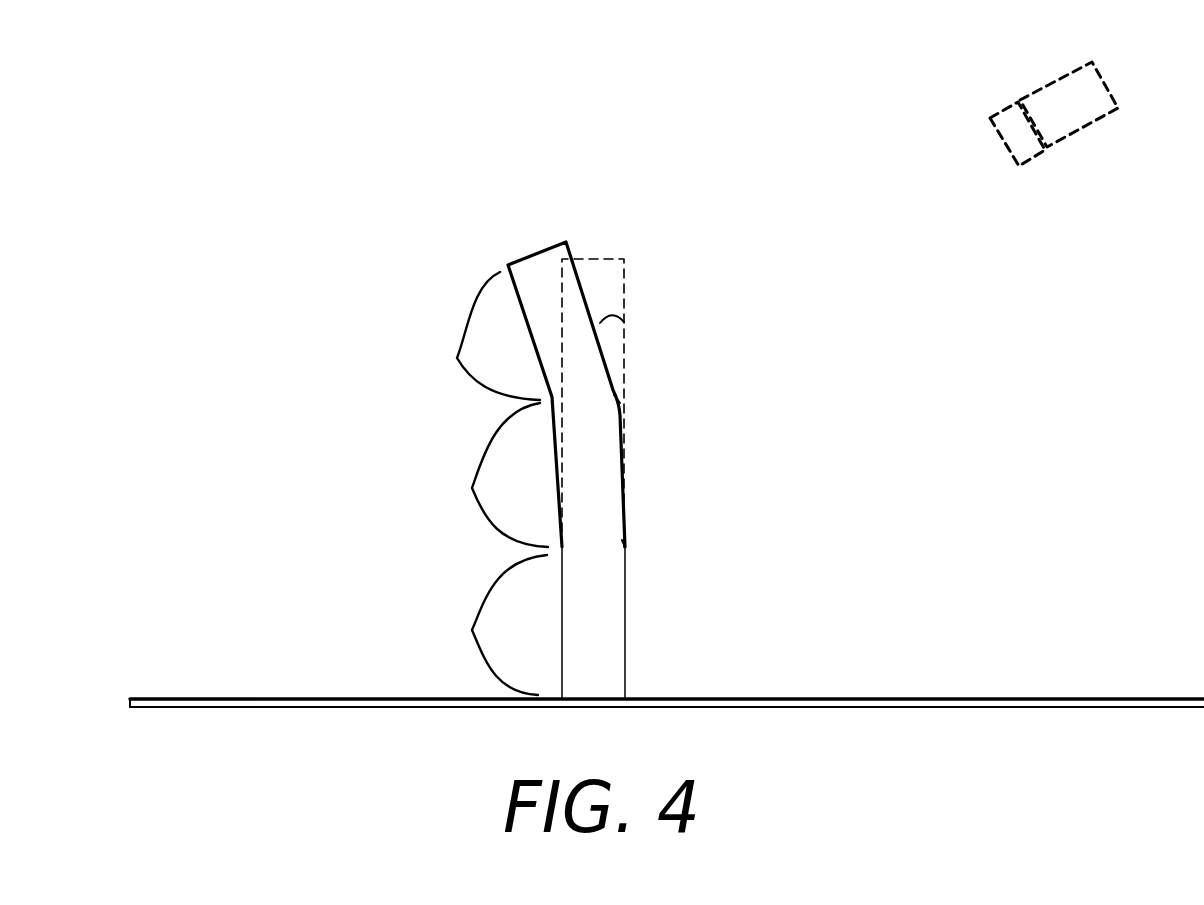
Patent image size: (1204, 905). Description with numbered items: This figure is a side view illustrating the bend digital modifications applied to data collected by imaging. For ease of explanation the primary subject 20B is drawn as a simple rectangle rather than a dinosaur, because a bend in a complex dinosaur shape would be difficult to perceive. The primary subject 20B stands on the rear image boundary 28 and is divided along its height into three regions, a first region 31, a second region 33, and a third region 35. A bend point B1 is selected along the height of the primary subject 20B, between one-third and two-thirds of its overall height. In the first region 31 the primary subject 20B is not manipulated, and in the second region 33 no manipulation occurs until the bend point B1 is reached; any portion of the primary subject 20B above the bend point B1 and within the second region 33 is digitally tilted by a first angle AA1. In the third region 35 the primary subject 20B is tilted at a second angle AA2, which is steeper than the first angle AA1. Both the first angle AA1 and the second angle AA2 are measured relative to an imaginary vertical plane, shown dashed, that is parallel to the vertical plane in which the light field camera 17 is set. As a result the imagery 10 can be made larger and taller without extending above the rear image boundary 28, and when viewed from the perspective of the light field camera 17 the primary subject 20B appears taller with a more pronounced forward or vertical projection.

The imagery 10 is at (355, 238).
The primary subject 20B is at (543, 247).
The light field camera 17 is at (1083, 133).
The rear image boundary 28 is at (130, 706).
The first region 31 is at (483, 625).
The second region 33 is at (480, 475).
The third region 35 is at (468, 336).
The first angle AA1 is at (620, 403).
The second angle AA2 is at (618, 322).
The bend point B1 is at (625, 545).